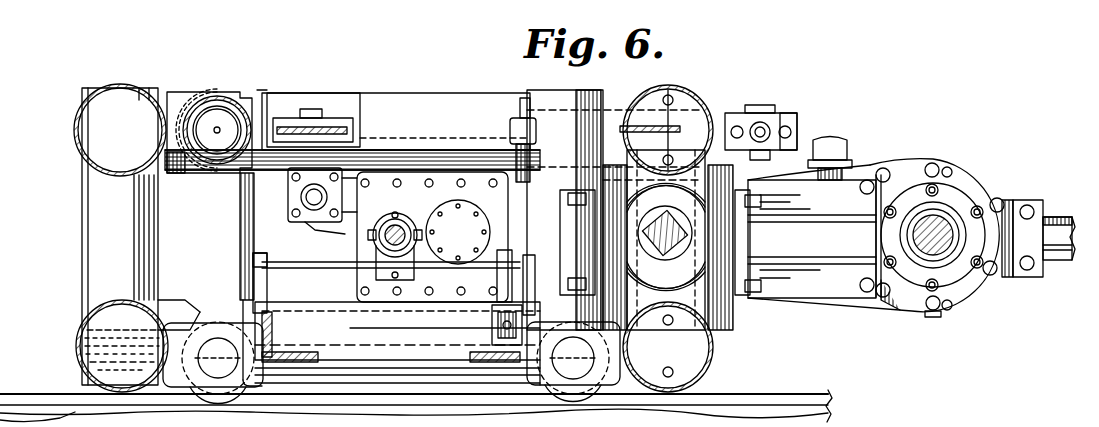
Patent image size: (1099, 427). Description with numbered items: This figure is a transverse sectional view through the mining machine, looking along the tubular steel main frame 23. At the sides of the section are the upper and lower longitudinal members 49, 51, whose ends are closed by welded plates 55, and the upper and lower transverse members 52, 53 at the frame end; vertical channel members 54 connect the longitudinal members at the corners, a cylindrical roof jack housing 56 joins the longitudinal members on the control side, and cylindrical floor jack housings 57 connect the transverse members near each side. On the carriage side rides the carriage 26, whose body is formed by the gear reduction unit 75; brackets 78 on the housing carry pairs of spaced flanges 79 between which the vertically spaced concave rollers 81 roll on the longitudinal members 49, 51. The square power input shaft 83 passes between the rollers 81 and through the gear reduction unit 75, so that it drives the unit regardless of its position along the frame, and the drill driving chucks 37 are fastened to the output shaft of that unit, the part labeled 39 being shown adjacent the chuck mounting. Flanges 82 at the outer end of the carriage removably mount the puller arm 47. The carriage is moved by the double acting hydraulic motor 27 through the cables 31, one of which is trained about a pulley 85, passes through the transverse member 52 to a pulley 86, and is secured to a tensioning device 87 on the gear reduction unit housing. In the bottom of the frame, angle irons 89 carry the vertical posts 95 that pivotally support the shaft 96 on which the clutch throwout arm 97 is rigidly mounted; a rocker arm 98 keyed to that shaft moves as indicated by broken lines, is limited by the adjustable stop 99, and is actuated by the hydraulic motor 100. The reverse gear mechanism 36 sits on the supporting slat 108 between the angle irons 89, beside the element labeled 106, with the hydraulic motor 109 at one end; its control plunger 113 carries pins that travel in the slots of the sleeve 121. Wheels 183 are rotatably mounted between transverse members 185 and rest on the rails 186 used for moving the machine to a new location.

The tubular steel main frame 23 is at (442, 92).
The carriage 26 is at (866, 178).
The hydraulic motor 27 is at (222, 98).
The cables 31 is at (352, 118).
The reverse gear mechanism 36 is at (372, 238).
The drill driving chucks 37 is at (945, 226).
The bearing sleeve 39 is at (962, 220).
The puller arm 47 is at (1058, 262).
The upper longitudinal member 49 is at (76, 129).
The lower longitudinal member 51 is at (82, 356).
The upper transverse member 52 is at (490, 104).
The lower transverse member 53 is at (372, 338).
The vertical channel members 54 is at (645, 218).
The plates 55 is at (100, 368).
The roof jack housings 56 is at (82, 230).
The floor jack housings 57 is at (600, 106).
The gear reduction unit 75 is at (896, 310).
The brackets 78 is at (818, 292).
The flanges 79 is at (578, 236).
The concave rollers 81 is at (608, 162).
The flanges 82 is at (1010, 276).
The power input shaft 83 is at (650, 244).
The pulley 85 is at (288, 128).
The pulley 86 is at (672, 127).
The tensioning device 87 is at (786, 115).
The angle irons 89 is at (326, 350).
The vertical posts 95 is at (258, 288).
The shaft 96 is at (292, 270).
The clutch throwout arm 97 is at (378, 258).
The rocker arm 98 is at (500, 282).
The adjustable stop 99 is at (492, 311).
The hydraulic motor 100 is at (506, 348).
The gear cover plate 106 is at (412, 222).
The supporting slat 108 is at (428, 322).
The hydraulic motor 109 is at (292, 190).
The control plunger 113 is at (316, 186).
The sleeve 121 is at (300, 200).
The wheels 183 is at (226, 388).
The transverse members 185 is at (182, 330).
The rails 186 is at (800, 406).